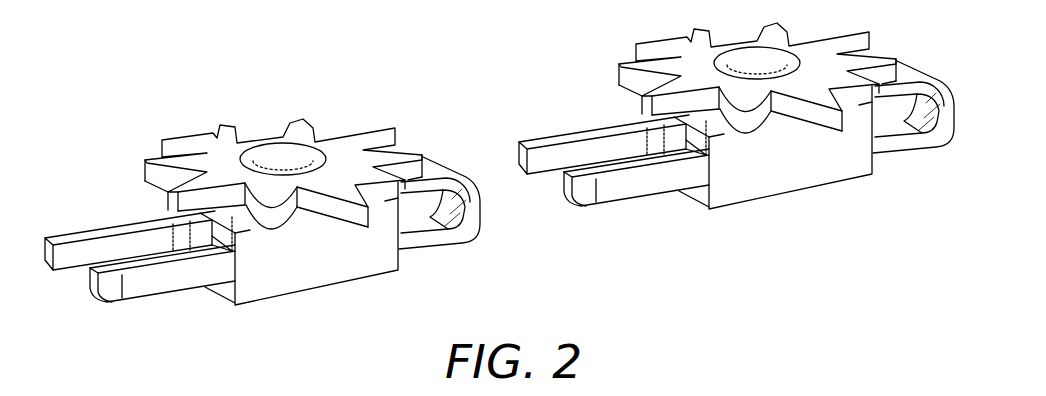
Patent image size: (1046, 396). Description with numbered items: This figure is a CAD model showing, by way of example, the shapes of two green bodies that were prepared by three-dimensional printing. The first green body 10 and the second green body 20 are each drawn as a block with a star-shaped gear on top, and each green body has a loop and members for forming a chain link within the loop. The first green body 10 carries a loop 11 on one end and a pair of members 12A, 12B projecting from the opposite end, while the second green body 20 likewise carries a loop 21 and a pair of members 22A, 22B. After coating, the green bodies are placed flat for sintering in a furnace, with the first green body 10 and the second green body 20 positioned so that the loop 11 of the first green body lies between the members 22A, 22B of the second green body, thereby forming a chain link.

The first green body 10 is at (292, 152).
The loop 11 is at (455, 254).
The member 12A is at (113, 227).
The member 12B is at (185, 290).
The second green body 20 is at (773, 164).
The loop 21 is at (919, 136).
The member 22A is at (612, 122).
The member 22B is at (636, 200).